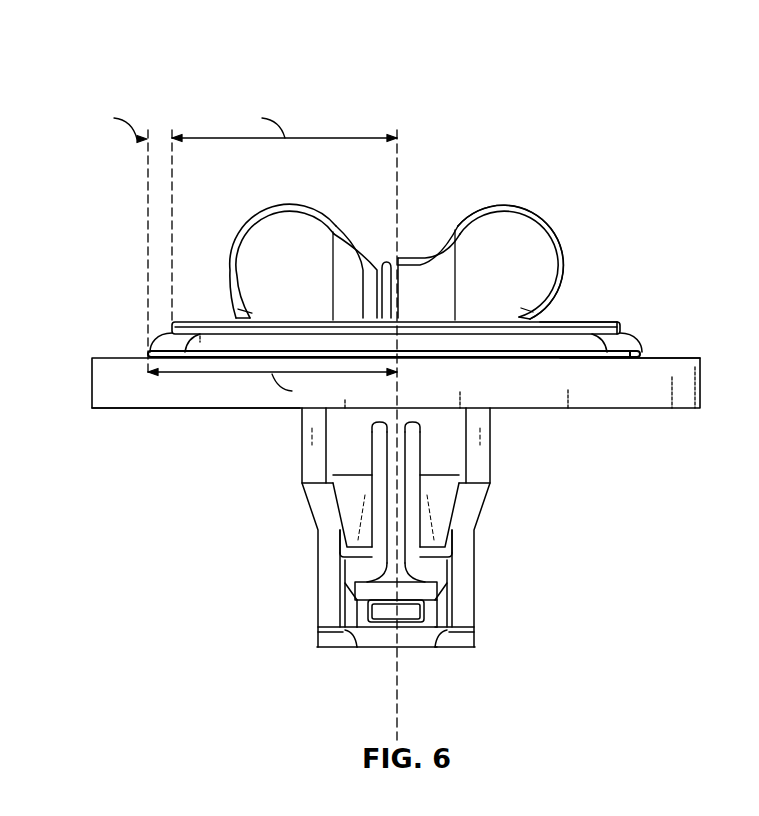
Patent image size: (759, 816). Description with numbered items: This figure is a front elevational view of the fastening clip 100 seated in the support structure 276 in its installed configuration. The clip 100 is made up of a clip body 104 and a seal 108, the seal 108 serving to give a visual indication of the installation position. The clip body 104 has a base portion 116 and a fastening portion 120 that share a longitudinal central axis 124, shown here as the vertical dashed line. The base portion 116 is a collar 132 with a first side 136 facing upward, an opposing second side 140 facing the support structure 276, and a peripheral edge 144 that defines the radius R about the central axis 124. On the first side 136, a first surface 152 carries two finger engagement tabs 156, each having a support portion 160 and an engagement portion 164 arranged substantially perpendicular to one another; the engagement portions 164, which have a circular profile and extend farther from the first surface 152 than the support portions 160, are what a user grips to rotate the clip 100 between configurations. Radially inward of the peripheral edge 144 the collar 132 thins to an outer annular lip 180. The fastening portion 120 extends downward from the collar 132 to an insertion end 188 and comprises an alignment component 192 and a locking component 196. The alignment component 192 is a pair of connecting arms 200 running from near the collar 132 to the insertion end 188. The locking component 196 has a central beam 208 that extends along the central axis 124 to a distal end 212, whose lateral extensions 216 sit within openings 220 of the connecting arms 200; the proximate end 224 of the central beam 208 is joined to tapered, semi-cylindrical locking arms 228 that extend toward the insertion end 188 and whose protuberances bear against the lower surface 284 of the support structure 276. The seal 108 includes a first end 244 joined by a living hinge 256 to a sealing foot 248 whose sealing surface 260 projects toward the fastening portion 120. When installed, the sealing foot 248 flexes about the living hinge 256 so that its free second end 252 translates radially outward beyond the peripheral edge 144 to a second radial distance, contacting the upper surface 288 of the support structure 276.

The fastening clip 100 is at (98, 88).
The clip body 104 is at (522, 313).
The seal 108 is at (200, 345).
The base portion 116 is at (686, 266).
The fastening portion 120 is at (560, 595).
The central axis 124 is at (397, 695).
The collar 132 is at (567, 320).
The first side 136 is at (219, 259).
The second side 140 is at (210, 403).
The peripheral edge 144 is at (170, 332).
The first surface 152 is at (247, 308).
The finger engagement tabs 156 is at (258, 240).
The support portion 160 is at (375, 273).
The engagement portion 164 is at (297, 222).
The outer annular lip 180 is at (190, 322).
The insertion end 188 is at (333, 648).
The alignment component 192 is at (453, 648).
The locking component 196 is at (445, 467).
The connecting arms 200 is at (317, 512).
The central beam 208 is at (387, 517).
The distal end 212 is at (380, 572).
The lateral extensions 216 is at (428, 625).
The openings 220 is at (302, 621).
The proximate end 224 is at (387, 427).
The locking arms 228 is at (342, 467).
The first end 244 is at (583, 342).
The sealing foot 248 is at (592, 341).
The second end 252 is at (637, 353).
The living hinge 256 is at (622, 325).
The sealing surface 260 is at (625, 370).
The support structure 276 is at (103, 390).
The lower surface 284 is at (123, 408).
The upper surface 288 is at (152, 355).